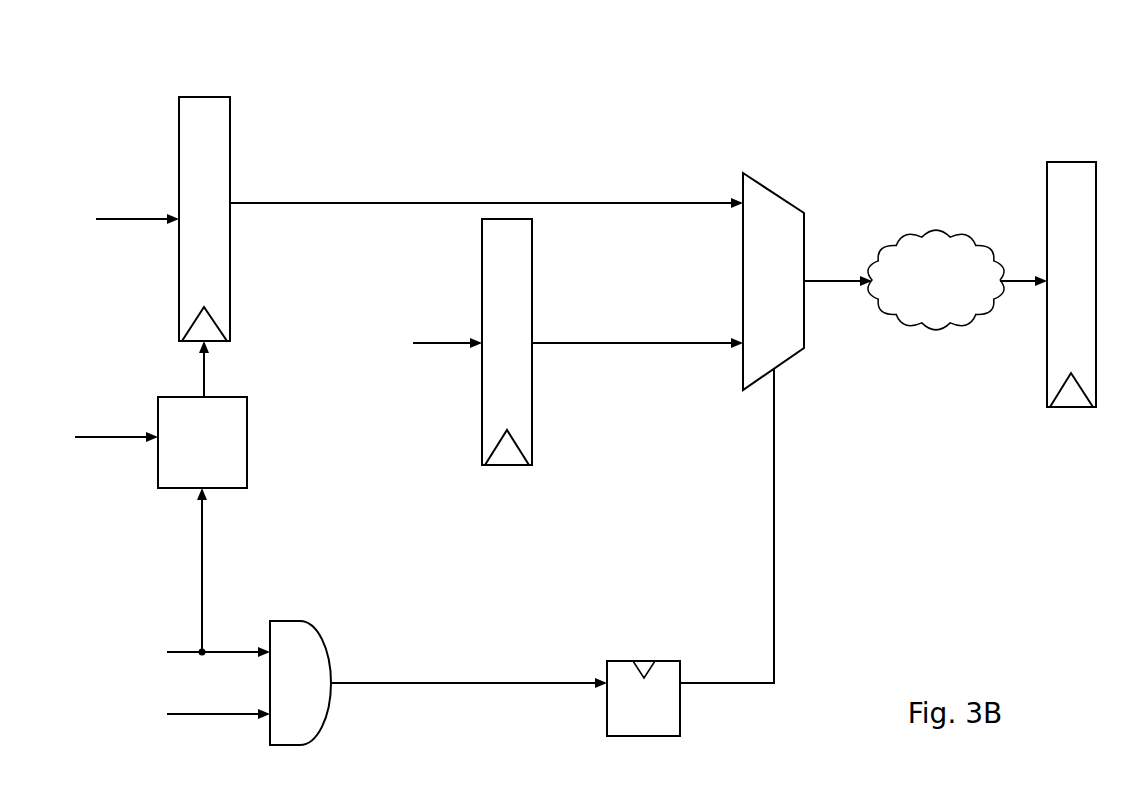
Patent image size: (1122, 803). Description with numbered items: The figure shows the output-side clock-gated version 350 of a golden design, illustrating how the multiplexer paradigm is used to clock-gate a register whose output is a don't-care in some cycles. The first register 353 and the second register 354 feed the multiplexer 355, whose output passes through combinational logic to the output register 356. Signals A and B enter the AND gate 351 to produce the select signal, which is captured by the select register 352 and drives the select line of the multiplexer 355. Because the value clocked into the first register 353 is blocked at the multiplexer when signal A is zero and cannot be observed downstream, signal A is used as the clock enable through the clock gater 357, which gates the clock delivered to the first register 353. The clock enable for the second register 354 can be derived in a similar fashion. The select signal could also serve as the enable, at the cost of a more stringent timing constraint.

The output-side clock-gated version 350 is at (746, 84).
The AND gate 351 is at (302, 618).
The flip-flop (select signal S0) 352 is at (628, 661).
The register D1 353 is at (213, 96).
The register D0 354 is at (478, 266).
The multiplexer 355 is at (758, 175).
The flip-flop P1 356 is at (1085, 162).
The clock gater 357 is at (235, 388).